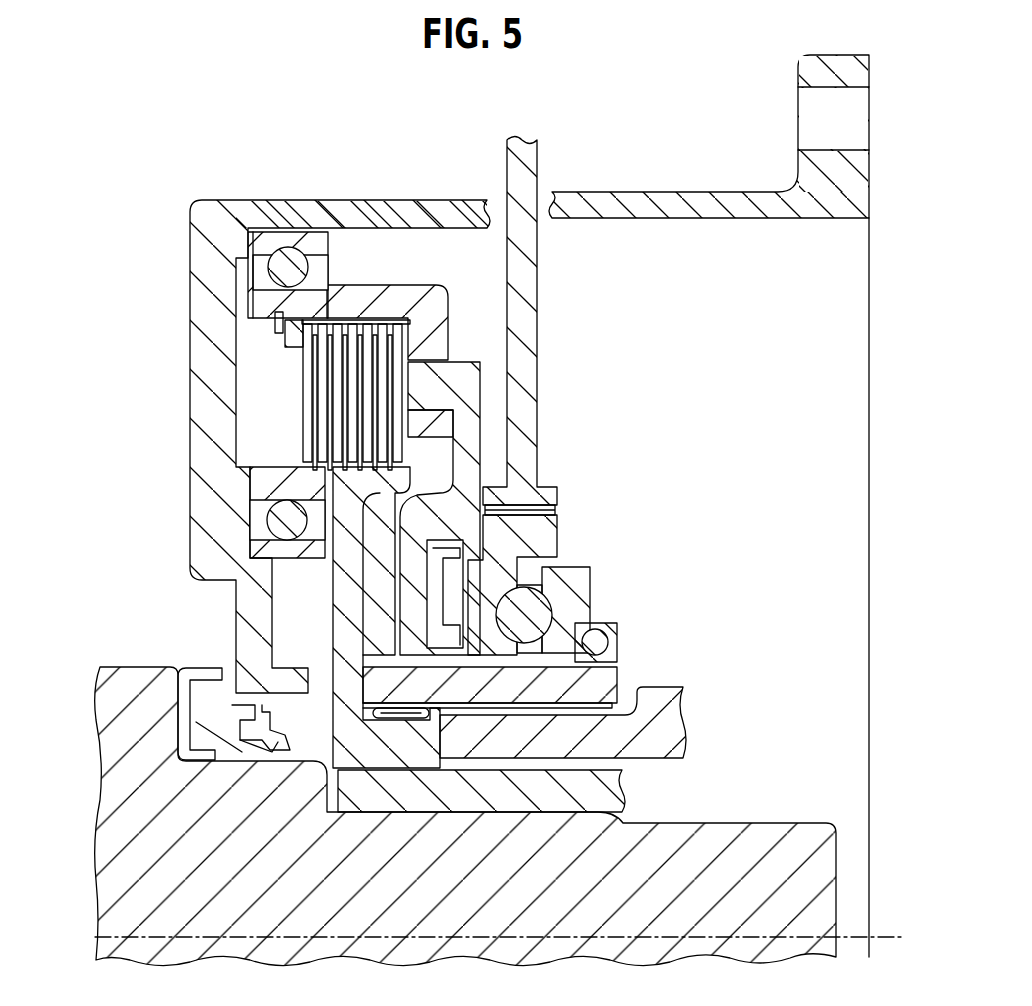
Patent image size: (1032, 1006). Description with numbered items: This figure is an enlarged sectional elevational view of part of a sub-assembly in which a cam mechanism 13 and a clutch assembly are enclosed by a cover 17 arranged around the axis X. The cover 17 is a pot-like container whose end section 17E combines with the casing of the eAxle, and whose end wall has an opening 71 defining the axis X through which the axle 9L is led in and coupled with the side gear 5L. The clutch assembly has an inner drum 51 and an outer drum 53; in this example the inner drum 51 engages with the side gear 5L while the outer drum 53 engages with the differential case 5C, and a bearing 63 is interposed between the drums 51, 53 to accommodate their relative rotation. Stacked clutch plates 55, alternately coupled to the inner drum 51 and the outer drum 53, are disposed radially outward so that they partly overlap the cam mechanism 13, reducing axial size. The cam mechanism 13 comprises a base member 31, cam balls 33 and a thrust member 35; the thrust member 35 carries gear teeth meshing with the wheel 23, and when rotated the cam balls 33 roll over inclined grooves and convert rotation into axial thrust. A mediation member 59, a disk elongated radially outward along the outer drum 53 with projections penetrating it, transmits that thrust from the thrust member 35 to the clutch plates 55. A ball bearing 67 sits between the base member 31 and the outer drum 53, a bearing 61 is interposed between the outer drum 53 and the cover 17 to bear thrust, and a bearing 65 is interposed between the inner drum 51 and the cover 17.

The cover 17 is at (190, 320).
The end section 17E is at (870, 173).
The bearing 61 is at (258, 242).
The clutch plates 55 is at (353, 267).
The mediation member 59 is at (467, 362).
The wheel 23 is at (536, 305).
The bearing 65 is at (250, 492).
The thrust member 35 is at (556, 514).
The cam balls 33 is at (563, 566).
The cam mechanism 13 is at (693, 557).
The base member 31 is at (592, 594).
The inner drum 51 is at (333, 607).
The ball bearing 67 is at (618, 655).
The opening 71 is at (187, 667).
The bearing 63 is at (375, 708).
The outer drum 53 is at (600, 672).
The differential case 5C is at (683, 692).
The axle 9L is at (100, 757).
The side gear 5L is at (622, 798).
The axis X is at (883, 935).